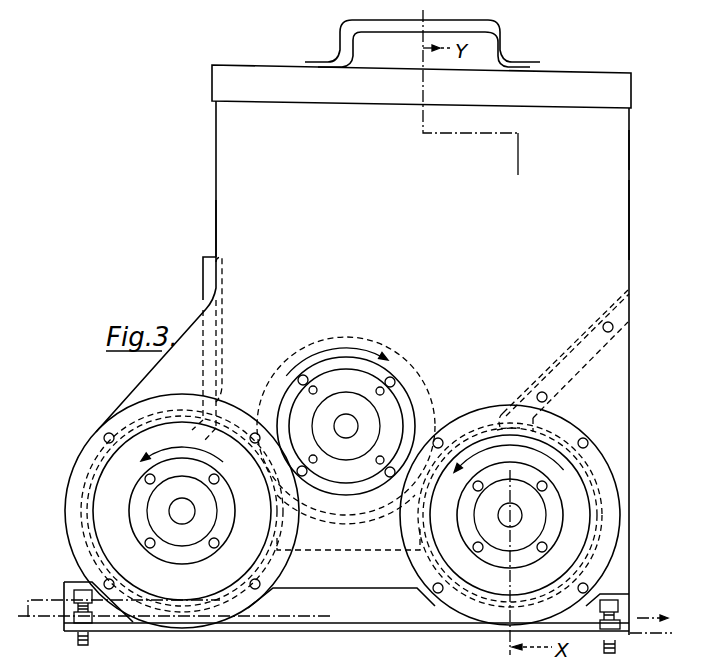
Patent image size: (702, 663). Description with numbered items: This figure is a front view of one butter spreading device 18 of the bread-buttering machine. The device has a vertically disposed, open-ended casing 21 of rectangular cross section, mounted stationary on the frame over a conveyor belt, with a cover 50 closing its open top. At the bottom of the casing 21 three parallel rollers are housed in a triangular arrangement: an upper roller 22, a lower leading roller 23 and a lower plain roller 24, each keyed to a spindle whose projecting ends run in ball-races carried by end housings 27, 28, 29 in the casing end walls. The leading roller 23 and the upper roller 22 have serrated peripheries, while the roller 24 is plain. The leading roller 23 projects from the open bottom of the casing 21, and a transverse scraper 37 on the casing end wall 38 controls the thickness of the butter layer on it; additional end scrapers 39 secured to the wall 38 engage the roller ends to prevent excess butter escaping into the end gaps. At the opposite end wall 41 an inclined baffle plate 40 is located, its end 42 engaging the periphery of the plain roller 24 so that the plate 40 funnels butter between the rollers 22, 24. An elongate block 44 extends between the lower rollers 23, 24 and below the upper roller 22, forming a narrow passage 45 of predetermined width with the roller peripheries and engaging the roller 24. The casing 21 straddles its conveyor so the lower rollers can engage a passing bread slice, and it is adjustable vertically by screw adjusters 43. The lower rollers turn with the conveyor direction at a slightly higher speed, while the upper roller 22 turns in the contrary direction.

The butter spreading device 18 is at (644, 153).
The casing 21 is at (606, 222).
The upper roller 22 is at (428, 392).
The leading roller 23 is at (122, 442).
The plain roller 24 is at (578, 466).
The end housing 27 is at (325, 380).
The end housing 28 is at (135, 525).
The end housing 29 is at (557, 520).
The transverse scraper 37 is at (204, 285).
The casing end wall 38 is at (216, 228).
The end scrapers 39 is at (224, 318).
The inclined baffle plate 40 is at (578, 349).
The end wall 41 is at (631, 203).
The end of the plate 42 is at (518, 441).
The screw adjusters 43 is at (76, 633).
The elongate block 44 is at (360, 533).
The narrow passage 45 is at (340, 518).
The cover 50 is at (632, 97).